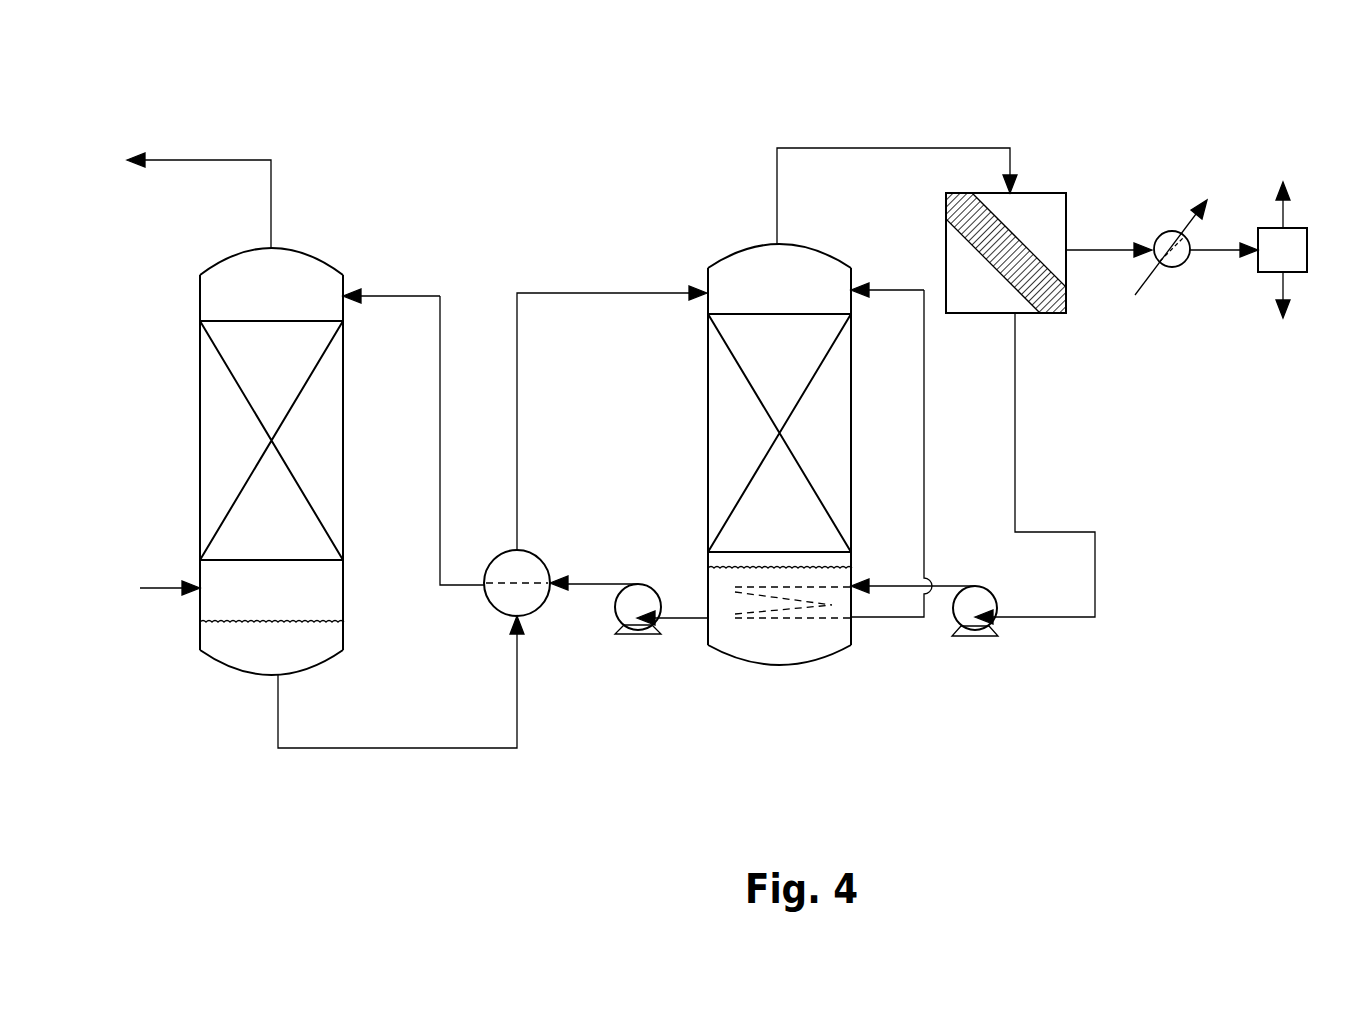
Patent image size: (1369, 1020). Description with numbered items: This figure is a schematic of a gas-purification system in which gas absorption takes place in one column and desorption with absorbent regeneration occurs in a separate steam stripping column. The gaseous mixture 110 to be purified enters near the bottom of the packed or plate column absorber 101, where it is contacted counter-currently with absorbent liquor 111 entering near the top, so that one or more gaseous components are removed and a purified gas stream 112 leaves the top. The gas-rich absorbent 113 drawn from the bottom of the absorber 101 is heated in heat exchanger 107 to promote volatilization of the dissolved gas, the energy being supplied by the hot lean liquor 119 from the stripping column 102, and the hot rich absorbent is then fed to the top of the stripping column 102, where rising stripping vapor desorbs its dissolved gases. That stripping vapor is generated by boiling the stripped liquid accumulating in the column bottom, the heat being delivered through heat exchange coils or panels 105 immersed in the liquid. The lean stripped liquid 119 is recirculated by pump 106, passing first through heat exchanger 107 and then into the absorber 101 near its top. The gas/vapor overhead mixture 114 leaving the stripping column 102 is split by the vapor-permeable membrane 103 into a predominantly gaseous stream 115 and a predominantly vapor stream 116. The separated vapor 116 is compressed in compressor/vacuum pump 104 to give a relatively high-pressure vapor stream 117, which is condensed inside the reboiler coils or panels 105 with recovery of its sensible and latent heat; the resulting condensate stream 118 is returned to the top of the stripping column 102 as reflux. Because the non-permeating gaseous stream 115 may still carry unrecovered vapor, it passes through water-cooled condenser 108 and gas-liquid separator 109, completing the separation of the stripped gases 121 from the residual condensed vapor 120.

The absorber 101 is at (200, 426).
The stripping column 102 is at (706, 391).
The vapor-permeable membrane 103 is at (944, 197).
The compressor/vacuum pump 104 is at (984, 642).
The heat exchange coils or panels 105 is at (742, 622).
The pump 106 is at (655, 582).
The heat exchanger 107 is at (537, 550).
The water-cooled condenser 108 is at (1178, 272).
The gas-liquid separator 109 is at (1313, 244).
The gaseous mixture 110 is at (141, 586).
The absorbent liquor 111 is at (395, 294).
The purified gas stream 112 is at (205, 147).
The gas-rich absorbent 113 is at (420, 750).
The gas/vapor overhead mixture 114 is at (849, 150).
The predominantly gaseous stream 115 is at (1094, 237).
The predominantly vapor stream 116 is at (1038, 378).
The vapor stream 117 is at (949, 587).
The condensate stream 118 is at (931, 433).
The lean liquor 119 is at (665, 652).
The residual condensed vapor 120 is at (1292, 292).
The stripped gases 121 is at (1299, 206).